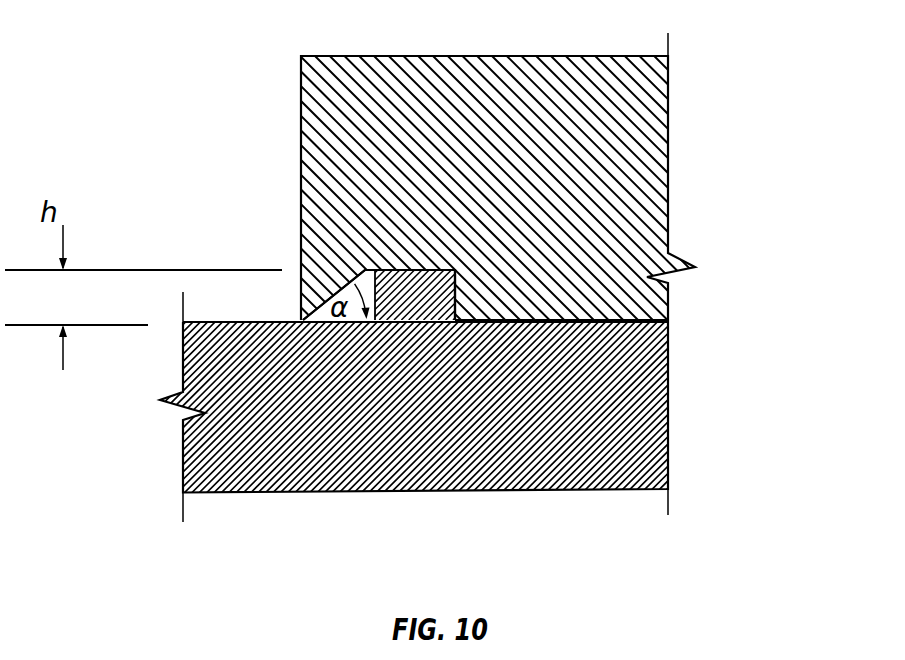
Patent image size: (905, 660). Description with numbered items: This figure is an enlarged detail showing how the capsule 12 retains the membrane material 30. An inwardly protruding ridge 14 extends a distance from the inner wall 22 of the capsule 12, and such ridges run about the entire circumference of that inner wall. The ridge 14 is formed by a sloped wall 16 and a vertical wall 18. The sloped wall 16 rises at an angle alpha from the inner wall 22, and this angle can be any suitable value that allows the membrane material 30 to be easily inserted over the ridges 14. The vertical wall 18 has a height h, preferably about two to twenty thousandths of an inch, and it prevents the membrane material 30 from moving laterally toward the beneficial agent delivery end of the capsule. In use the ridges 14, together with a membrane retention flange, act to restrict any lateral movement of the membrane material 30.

The membrane material 30 is at (301, 153).
The capsule 12 is at (648, 407).
The inwardly protruding ridges 14 is at (376, 268).
The sloped wall 16 is at (332, 286).
The vertical wall 18 is at (458, 308).
The inner wall 22 is at (257, 322).